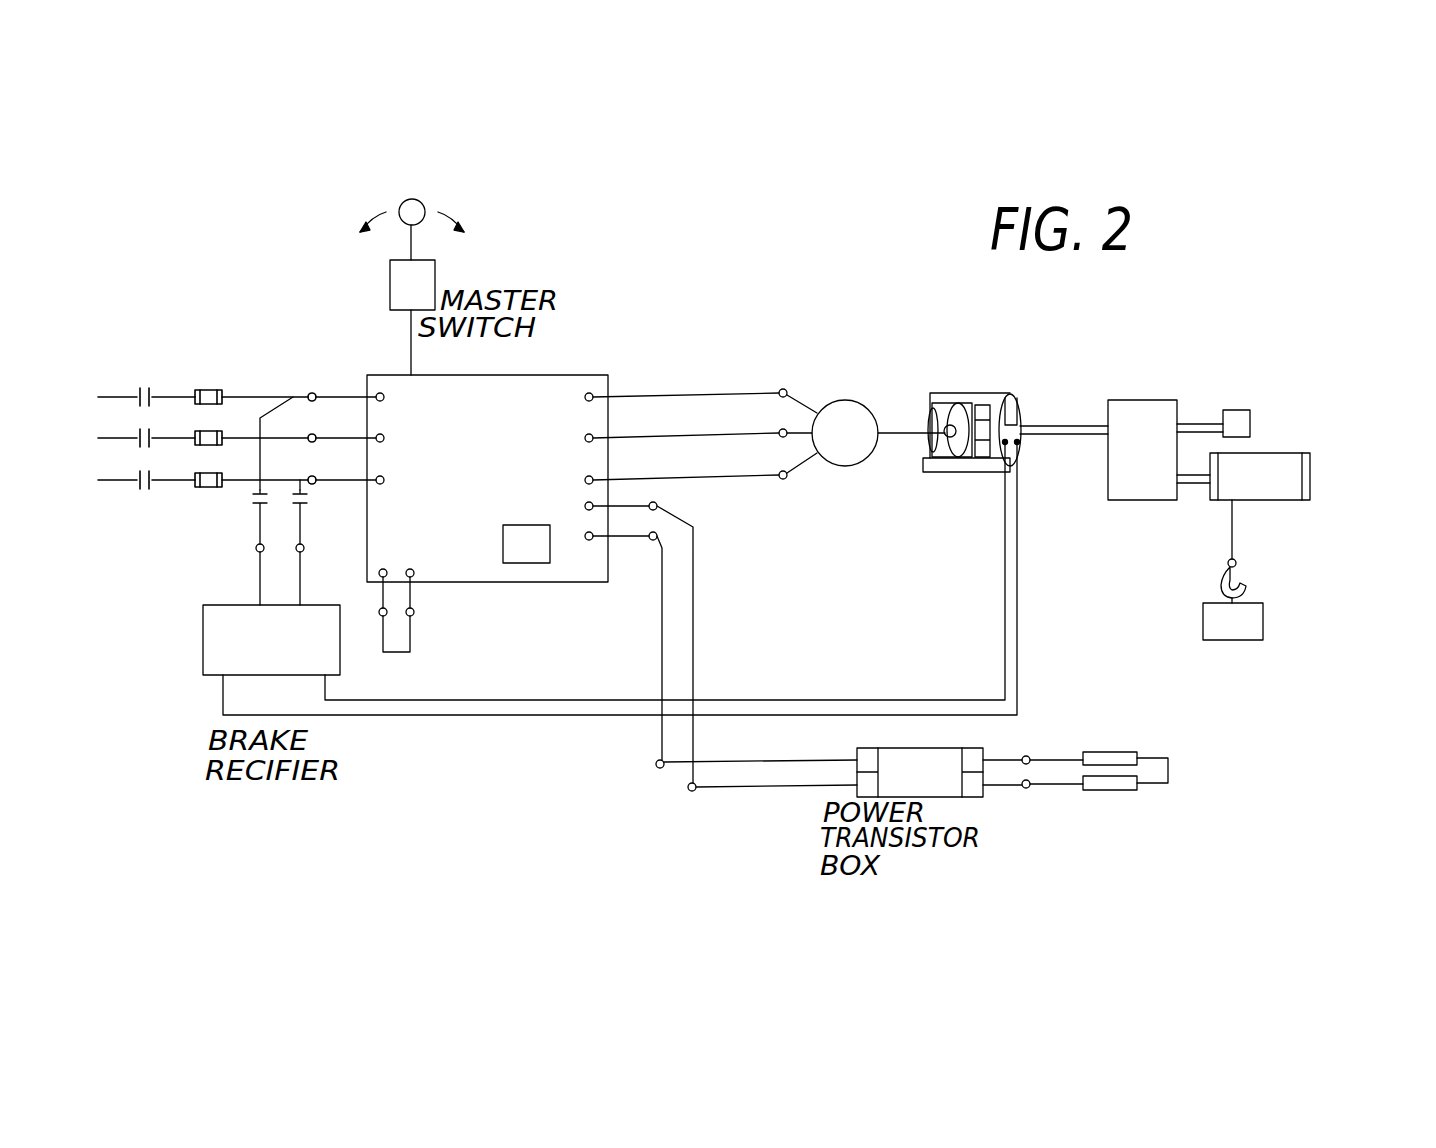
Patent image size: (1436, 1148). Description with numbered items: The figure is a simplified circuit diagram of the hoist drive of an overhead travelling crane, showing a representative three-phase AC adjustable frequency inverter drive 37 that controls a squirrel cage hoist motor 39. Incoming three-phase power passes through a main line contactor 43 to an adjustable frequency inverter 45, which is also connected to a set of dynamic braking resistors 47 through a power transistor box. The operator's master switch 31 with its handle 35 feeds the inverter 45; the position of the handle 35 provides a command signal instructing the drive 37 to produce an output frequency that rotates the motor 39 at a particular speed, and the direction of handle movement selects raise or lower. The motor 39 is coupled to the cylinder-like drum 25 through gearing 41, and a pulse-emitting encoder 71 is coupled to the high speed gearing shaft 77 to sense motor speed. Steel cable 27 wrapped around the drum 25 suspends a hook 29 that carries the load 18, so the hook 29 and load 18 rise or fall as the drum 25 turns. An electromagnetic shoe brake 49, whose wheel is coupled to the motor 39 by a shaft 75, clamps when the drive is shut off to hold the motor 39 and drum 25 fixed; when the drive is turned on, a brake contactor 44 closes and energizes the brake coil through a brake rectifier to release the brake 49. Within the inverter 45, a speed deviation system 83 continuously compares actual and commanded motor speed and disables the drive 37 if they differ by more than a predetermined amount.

The load 18 is at (1212, 632).
The drum 25 is at (1280, 463).
The steel cable 27 is at (1232, 528).
The hook 29 is at (1218, 585).
The master switch 31 is at (430, 292).
The master switch handle 35 is at (413, 207).
The inverter drive 37 is at (694, 312).
The hoist motor 39 is at (848, 400).
The gearing 41 is at (1140, 403).
The main line contactor 43 is at (147, 387).
The brake contactor 44 is at (236, 514).
The adjustable frequency inverter 45 is at (501, 476).
The dynamic braking resistors 47 is at (1108, 790).
The electromagnetic shoe brake 49 is at (978, 472).
The pulse-emitting encoder 71 is at (1245, 410).
The shaft 75 is at (918, 420).
The high speed gearing shaft 77 is at (1206, 422).
The speed deviation system 83 is at (538, 565).